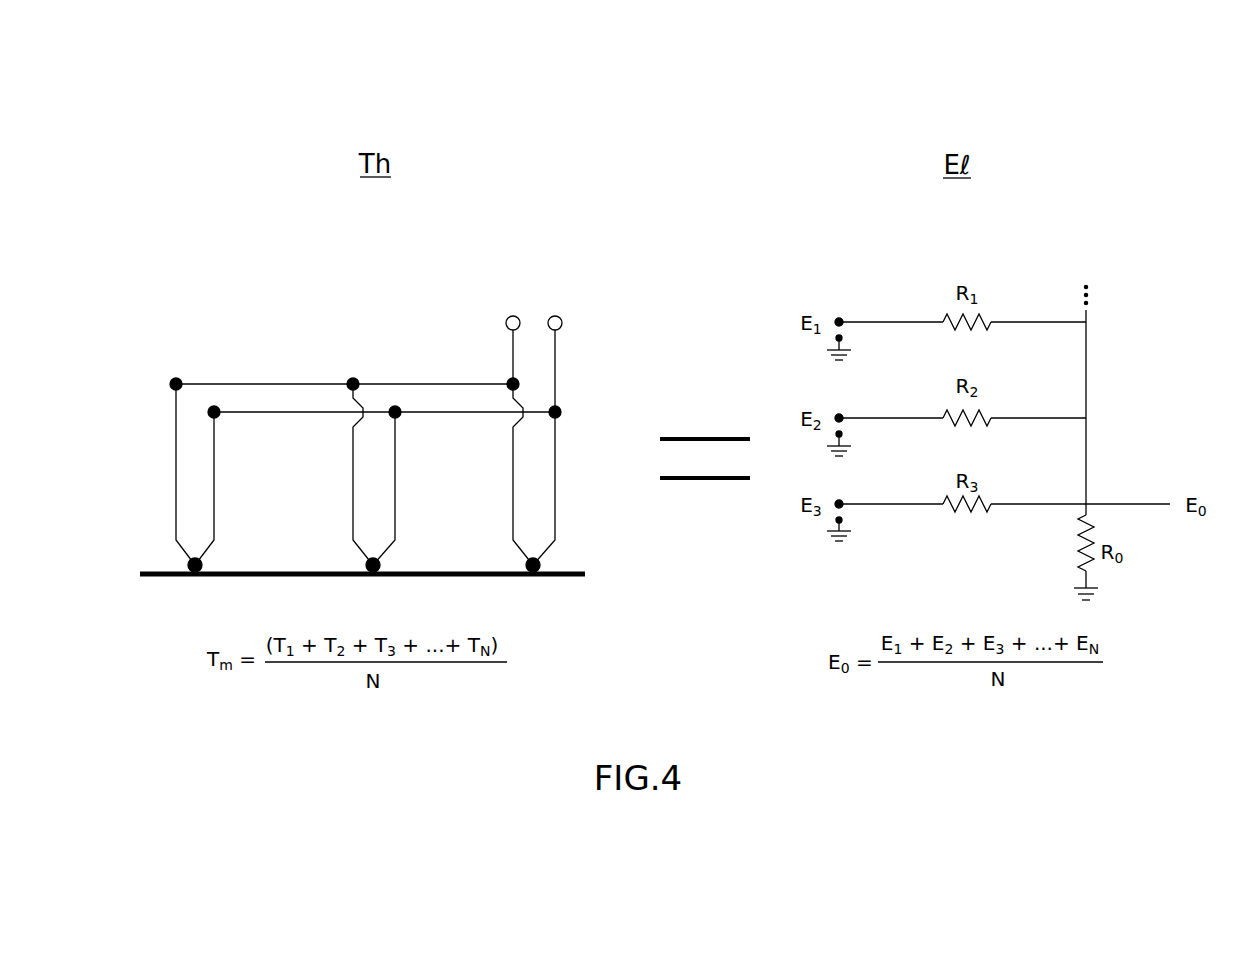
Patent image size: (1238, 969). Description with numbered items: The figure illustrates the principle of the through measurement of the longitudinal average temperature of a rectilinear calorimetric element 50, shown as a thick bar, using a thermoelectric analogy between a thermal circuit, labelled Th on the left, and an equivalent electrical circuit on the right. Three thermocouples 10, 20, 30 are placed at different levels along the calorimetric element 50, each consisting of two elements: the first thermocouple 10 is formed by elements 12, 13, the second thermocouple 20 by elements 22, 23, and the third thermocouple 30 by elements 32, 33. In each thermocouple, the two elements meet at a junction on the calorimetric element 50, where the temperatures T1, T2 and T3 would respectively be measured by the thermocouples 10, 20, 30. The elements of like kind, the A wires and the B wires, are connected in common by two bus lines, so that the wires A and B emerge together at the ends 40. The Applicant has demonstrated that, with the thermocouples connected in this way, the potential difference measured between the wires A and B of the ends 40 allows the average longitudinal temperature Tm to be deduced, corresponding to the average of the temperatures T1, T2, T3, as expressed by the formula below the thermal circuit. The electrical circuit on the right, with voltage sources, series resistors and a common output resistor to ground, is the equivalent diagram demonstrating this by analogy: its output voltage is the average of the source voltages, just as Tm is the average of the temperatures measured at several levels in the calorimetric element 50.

The thermocouple 10 is at (148, 542).
The thermocouple element 12 is at (177, 502).
The thermocouple element 13 is at (213, 440).
The thermocouple 20 is at (335, 509).
The thermocouple element 22 is at (352, 443).
The thermocouple element 23 is at (393, 430).
The thermocouple 30 is at (498, 511).
The thermocouple element 32 is at (513, 450).
The thermocouple element 33 is at (555, 502).
The ends 40 is at (545, 266).
The calorimetric element 50 is at (153, 576).